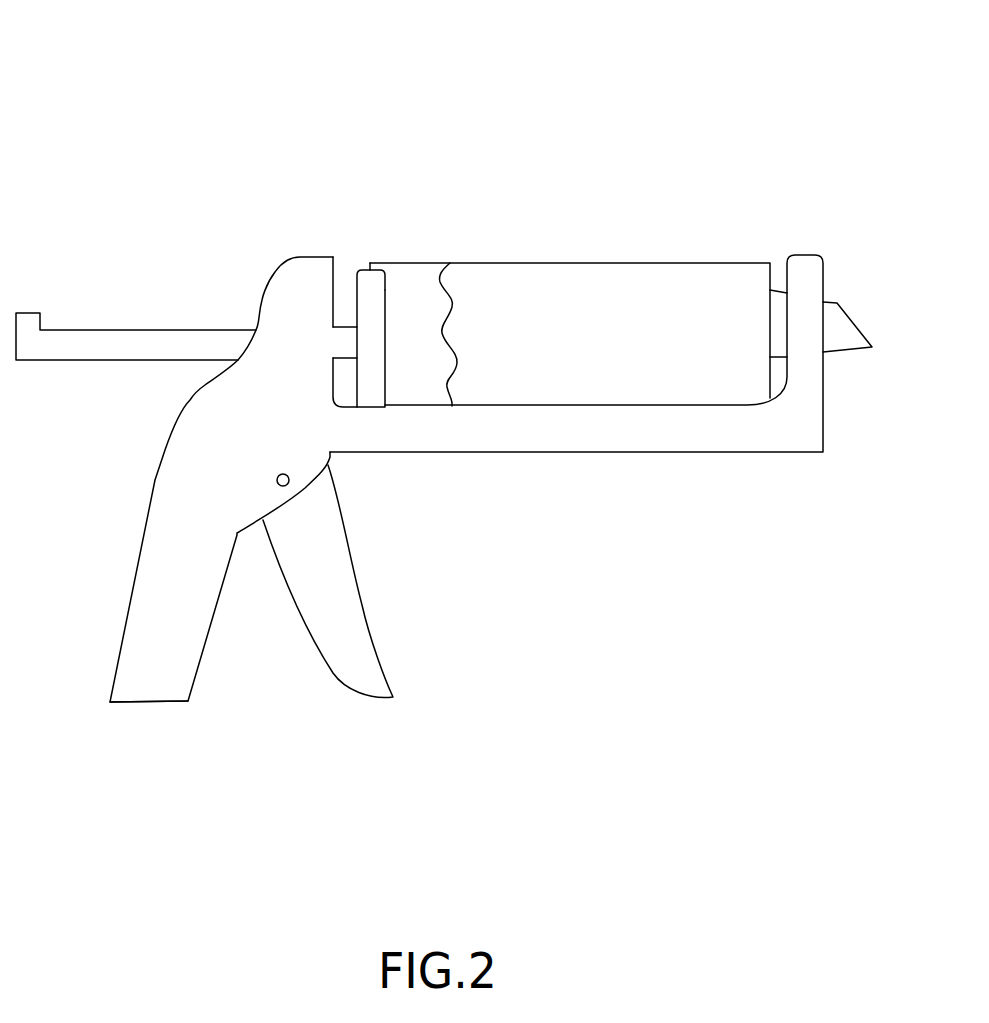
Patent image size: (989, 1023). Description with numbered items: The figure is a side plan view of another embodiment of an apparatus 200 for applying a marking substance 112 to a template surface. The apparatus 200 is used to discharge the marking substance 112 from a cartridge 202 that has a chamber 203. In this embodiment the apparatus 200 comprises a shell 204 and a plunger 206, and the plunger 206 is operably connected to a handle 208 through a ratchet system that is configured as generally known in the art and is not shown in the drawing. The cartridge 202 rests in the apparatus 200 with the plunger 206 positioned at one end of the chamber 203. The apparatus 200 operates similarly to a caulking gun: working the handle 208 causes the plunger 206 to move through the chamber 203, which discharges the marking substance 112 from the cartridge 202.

The apparatus 200 is at (88, 103).
The cartridge 202 is at (390, 230).
The chamber 203 is at (410, 282).
The marking substance 112 is at (623, 280).
The plunger 206 is at (372, 373).
The shell 204 is at (320, 440).
The handle 208 is at (397, 715).